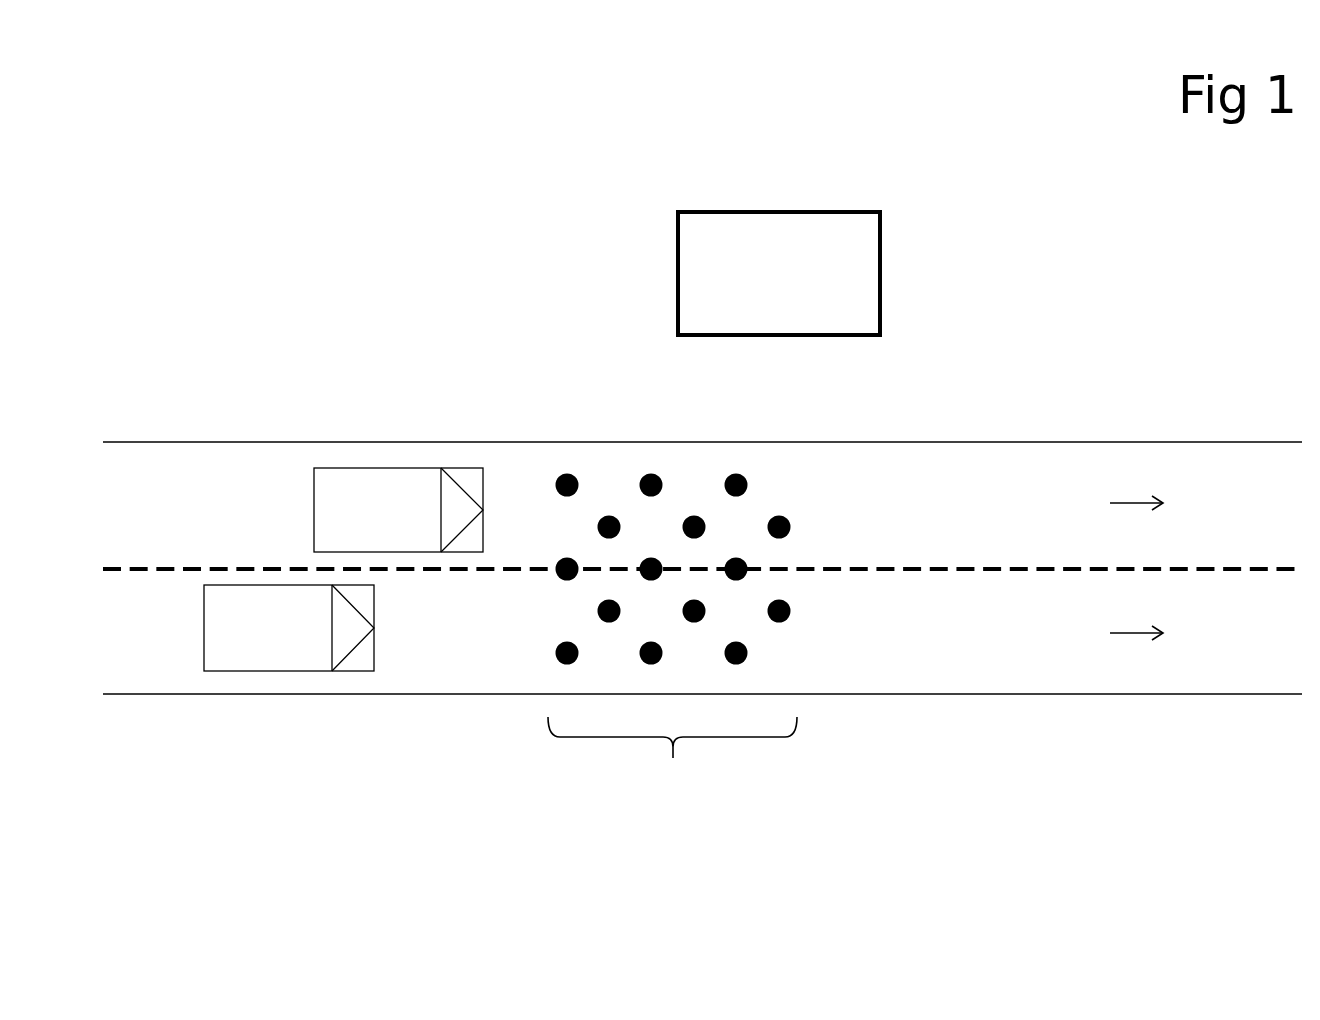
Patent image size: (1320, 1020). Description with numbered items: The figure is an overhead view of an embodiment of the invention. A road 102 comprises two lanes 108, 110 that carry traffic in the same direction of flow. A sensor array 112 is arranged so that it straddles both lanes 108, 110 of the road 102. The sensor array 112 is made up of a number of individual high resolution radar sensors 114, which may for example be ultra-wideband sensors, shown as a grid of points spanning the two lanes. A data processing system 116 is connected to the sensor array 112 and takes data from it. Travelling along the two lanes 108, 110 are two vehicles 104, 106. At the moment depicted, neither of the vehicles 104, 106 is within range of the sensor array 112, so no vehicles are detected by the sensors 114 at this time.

The road 102 is at (253, 440).
The vehicle 104 is at (380, 501).
The vehicle 106 is at (252, 652).
The lane 108 is at (1106, 506).
The lane 110 is at (1106, 636).
The sensor array 112 is at (672, 584).
The high resolution radar sensors 114 is at (604, 516).
The data processing system 116 is at (740, 476).